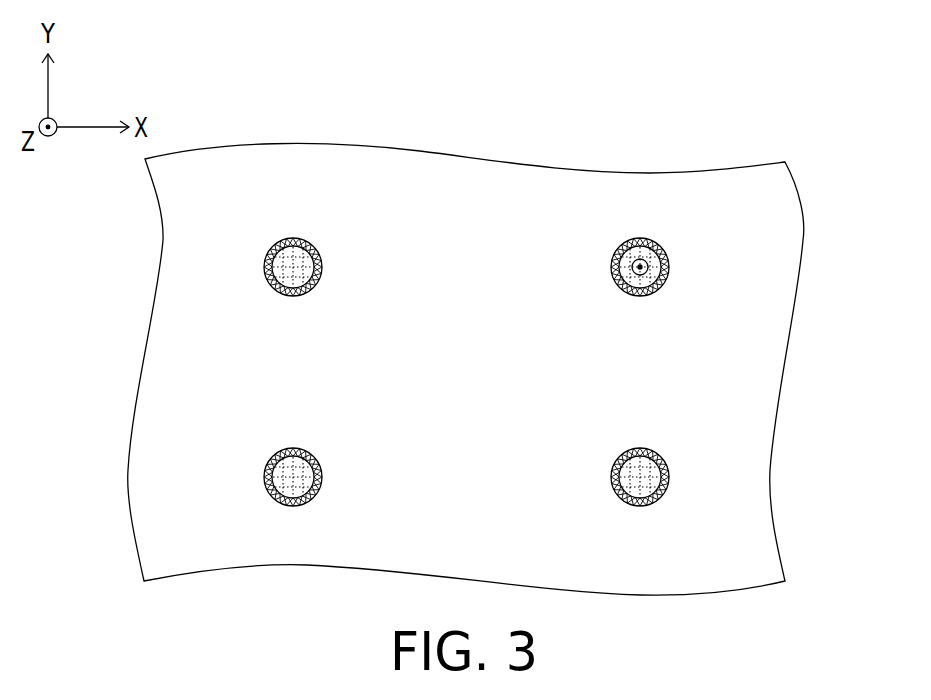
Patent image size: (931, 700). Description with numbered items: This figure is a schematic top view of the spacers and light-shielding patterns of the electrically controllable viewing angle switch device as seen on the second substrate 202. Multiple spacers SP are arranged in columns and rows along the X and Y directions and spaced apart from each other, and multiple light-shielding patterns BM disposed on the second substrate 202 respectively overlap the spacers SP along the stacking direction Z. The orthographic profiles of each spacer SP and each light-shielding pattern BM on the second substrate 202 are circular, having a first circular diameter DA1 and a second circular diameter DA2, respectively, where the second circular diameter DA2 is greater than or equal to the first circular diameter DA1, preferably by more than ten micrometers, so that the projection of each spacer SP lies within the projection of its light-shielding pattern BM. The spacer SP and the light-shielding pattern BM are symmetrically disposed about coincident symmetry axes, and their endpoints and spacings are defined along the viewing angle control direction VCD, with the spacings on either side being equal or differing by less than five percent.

The second substrate 202 is at (740, 527).
The first circular diameter DA1 is at (314, 287).
The second circular diameter DA2 is at (323, 250).
The viewing angle control direction VCD is at (568, 94).
The spacer SP is at (613, 262).
The light-shielding pattern BM is at (650, 290).